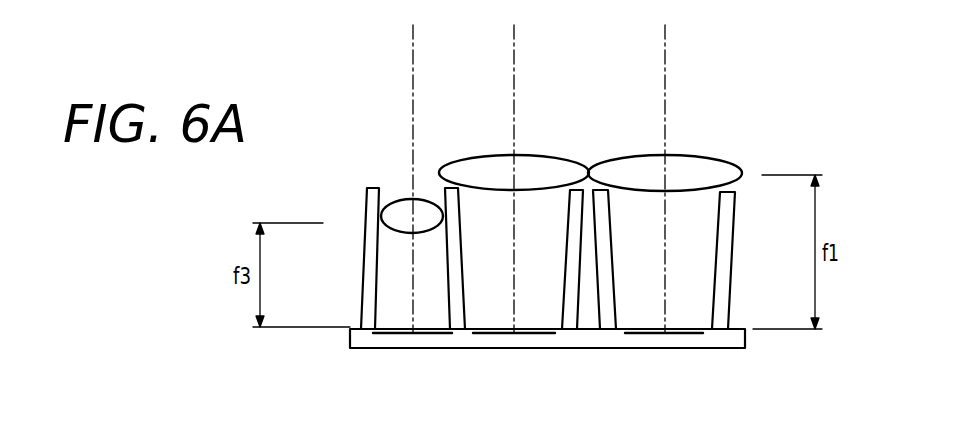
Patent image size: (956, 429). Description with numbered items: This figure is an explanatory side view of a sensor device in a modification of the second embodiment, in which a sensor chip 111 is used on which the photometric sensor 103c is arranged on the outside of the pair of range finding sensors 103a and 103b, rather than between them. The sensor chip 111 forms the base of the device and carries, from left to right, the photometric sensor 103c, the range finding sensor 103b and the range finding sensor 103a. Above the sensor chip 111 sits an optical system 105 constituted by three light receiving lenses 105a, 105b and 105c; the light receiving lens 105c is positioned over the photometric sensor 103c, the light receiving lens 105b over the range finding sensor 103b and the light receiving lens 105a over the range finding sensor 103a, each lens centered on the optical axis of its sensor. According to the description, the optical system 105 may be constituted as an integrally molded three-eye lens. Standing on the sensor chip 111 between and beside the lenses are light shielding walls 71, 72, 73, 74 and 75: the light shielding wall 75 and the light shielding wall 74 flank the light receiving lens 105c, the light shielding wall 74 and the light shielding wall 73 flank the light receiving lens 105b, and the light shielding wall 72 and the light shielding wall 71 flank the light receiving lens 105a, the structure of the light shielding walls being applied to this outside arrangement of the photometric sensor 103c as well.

The optical system 105 is at (748, 93).
The light receiving lens 105a is at (713, 143).
The light receiving lens 105b is at (565, 143).
The light receiving lens 105c is at (402, 198).
The light shielding wall 71 is at (720, 237).
The light shielding wall 72 is at (615, 235).
The light shielding wall 73 is at (568, 235).
The light shielding wall 74 is at (463, 237).
The light shielding wall 75 is at (363, 237).
The range finding sensor 103a is at (642, 336).
The range finding sensor 103b is at (495, 333).
The photometric sensor 103c is at (392, 336).
The sensor chip 111 is at (712, 348).